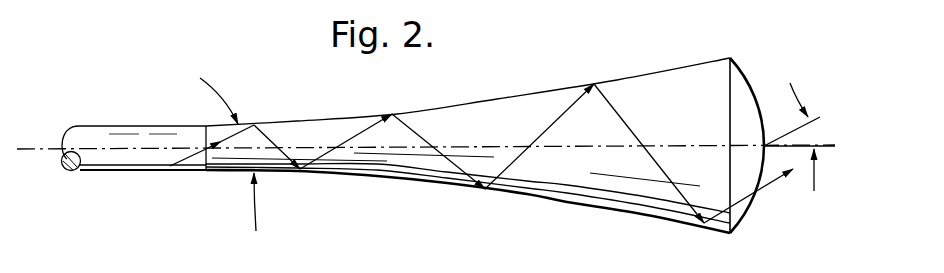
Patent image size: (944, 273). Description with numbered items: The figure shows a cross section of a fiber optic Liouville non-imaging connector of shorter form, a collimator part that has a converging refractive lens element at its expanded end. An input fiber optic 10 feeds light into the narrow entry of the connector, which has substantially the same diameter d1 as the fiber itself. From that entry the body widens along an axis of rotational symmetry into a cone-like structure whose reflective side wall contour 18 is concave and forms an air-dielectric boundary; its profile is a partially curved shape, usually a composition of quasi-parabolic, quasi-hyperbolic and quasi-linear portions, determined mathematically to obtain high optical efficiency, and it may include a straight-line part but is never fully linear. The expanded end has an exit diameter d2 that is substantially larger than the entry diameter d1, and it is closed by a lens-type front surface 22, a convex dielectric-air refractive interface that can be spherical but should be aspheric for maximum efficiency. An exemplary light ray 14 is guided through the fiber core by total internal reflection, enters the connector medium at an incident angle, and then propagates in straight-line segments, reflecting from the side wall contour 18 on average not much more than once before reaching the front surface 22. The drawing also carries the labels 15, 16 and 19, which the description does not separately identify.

The input fiber optic 10 is at (113, 157).
The exemplary light ray 14 is at (196, 152).
The light ray 15 is at (422, 148).
The output end 16 is at (822, 122).
The side wall contour 18 is at (545, 200).
The core of tapered section 19 is at (417, 167).
The lens-type front surface 22 is at (757, 85).
The entry diameter d1 is at (209, 131).
The exit diameter d2 is at (733, 72).